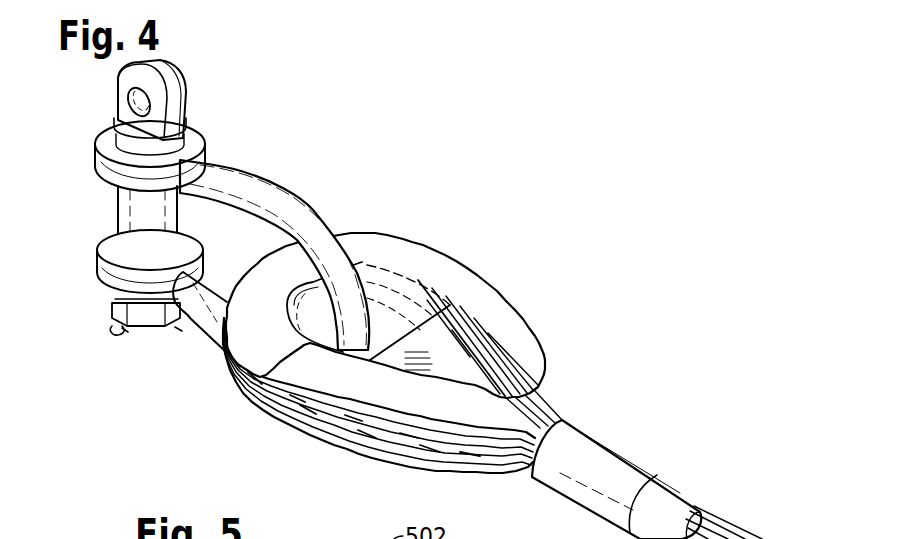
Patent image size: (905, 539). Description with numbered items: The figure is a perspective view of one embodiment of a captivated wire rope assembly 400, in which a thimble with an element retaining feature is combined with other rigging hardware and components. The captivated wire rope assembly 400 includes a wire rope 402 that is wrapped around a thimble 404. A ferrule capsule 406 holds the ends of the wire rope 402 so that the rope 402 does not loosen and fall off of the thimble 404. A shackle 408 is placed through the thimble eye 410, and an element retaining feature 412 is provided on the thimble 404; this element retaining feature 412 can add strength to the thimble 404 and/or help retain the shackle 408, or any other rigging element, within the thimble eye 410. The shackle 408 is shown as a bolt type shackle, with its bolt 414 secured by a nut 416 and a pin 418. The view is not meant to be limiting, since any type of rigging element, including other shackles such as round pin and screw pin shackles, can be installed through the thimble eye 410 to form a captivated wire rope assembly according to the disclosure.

The captivated wire rope assembly 400 is at (509, 196).
The wire rope 402 is at (727, 533).
The thimble 404 is at (515, 337).
The ferrule capsule 406 is at (618, 463).
The shackle 408 is at (263, 192).
The thimble eye 410 is at (390, 330).
The element retaining feature 412 is at (420, 337).
The bolt 414 is at (170, 83).
The nut 416 is at (110, 305).
The pin 418 is at (112, 326).